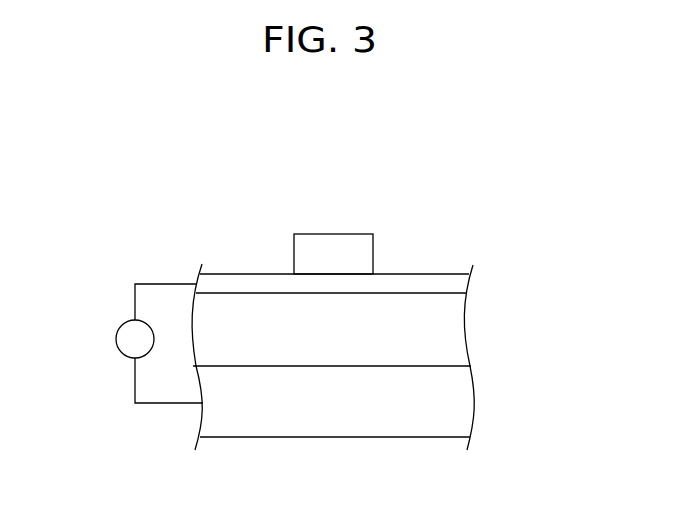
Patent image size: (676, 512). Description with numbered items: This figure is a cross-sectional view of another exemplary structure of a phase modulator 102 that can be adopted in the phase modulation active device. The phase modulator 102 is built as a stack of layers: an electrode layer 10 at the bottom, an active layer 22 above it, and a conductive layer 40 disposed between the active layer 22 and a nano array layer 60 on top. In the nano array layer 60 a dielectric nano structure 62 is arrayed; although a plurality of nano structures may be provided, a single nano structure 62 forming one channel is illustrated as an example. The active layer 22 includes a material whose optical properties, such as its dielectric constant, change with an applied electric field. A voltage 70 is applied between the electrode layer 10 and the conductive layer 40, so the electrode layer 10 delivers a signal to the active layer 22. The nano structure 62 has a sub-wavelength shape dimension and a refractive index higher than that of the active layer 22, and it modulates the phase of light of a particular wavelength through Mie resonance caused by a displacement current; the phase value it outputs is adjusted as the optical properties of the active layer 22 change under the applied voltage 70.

The phase modulator 102 is at (488, 177).
The electrode layer 10 is at (454, 402).
The active layer 22 is at (454, 329).
The conductive layer 40 is at (454, 283).
The nano array layer 60 is at (382, 253).
The nano structure 62 is at (338, 238).
The voltage 70 is at (116, 339).